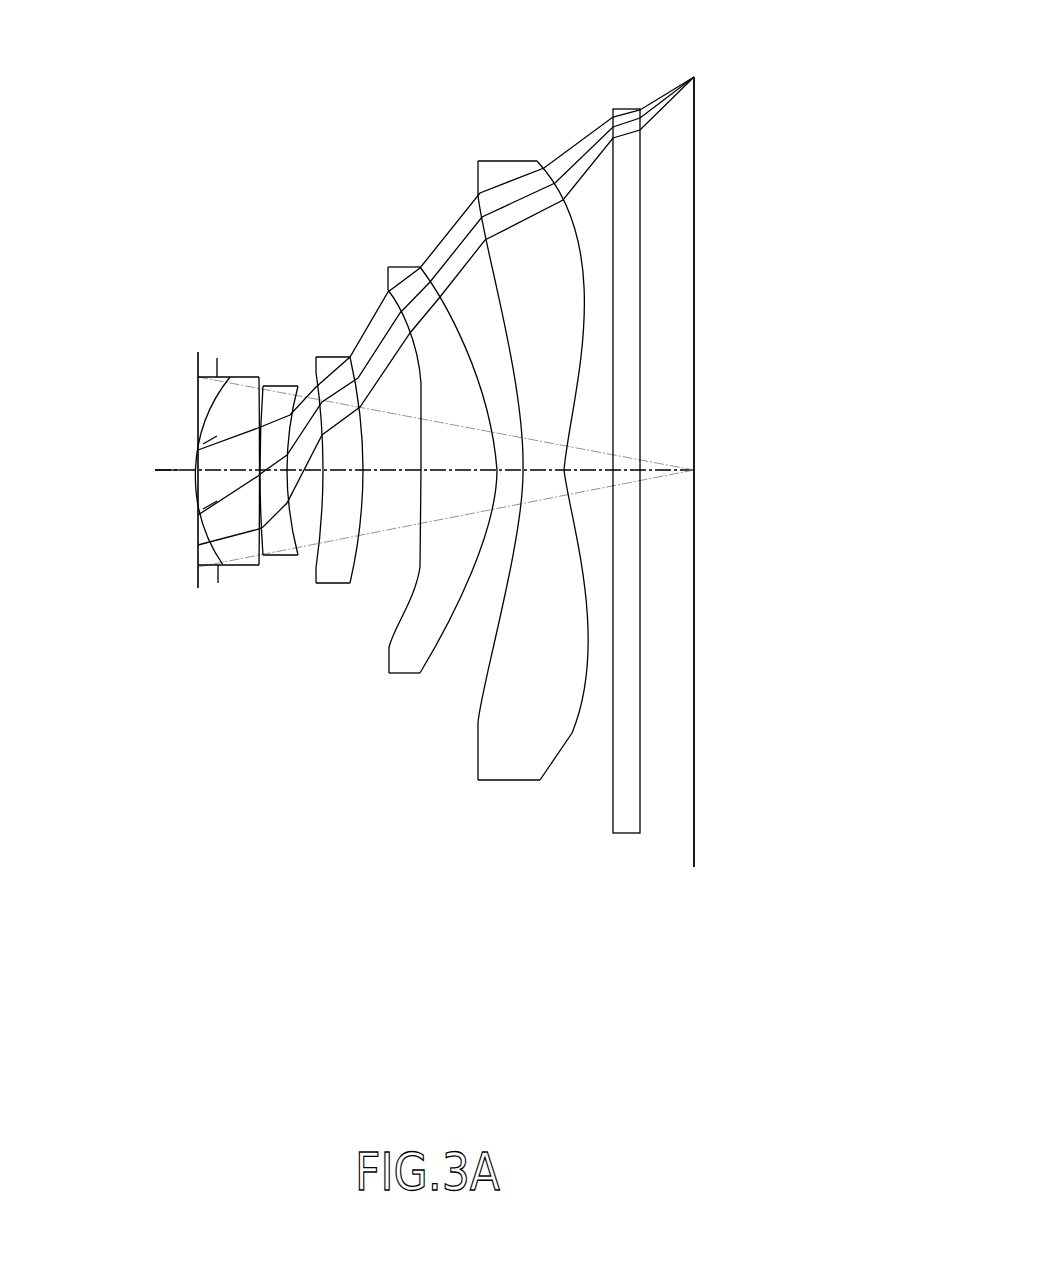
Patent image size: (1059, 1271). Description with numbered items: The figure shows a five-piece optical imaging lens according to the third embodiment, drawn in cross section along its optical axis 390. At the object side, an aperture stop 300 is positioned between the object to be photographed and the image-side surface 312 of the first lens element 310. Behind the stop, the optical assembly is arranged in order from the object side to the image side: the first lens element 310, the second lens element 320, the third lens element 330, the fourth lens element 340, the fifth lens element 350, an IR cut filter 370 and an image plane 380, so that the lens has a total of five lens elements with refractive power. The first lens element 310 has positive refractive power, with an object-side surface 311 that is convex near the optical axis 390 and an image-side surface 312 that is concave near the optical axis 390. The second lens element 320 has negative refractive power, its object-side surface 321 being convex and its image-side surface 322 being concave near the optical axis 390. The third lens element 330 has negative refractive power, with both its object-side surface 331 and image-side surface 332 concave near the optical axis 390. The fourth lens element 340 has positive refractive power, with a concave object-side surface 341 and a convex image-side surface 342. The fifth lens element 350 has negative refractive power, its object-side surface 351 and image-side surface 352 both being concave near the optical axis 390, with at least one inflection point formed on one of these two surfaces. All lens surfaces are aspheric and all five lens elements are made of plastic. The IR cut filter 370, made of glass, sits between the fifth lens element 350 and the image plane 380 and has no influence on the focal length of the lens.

The aperture stop 300 is at (214, 353).
The first lens element 310 is at (199, 505).
The object-side surface of the first lens element 311 is at (208, 542).
The image-side surface of the first lens element 312 is at (259, 548).
The second lens element 320 is at (267, 458).
The object-side surface of the second lens element 321 is at (262, 545).
The image-side surface of the second lens element 322 is at (287, 505).
The third lens element 330 is at (328, 508).
The object-side surface of the third lens element 331 is at (322, 560).
The image-side surface of the third lens element 332 is at (361, 558).
The fourth lens element 340 is at (428, 490).
The object-side surface of the fourth lens element 341 is at (420, 567).
The image-side surface of the fourth lens element 342 is at (450, 627).
The fifth lens element 350 is at (519, 487).
The object-side surface of the fifth lens element 351 is at (483, 700).
The image-side surface of the fifth lens element 352 is at (572, 733).
The IR cut filter 370 is at (628, 101).
The image plane 380 is at (694, 767).
The optical axis 390 is at (172, 470).